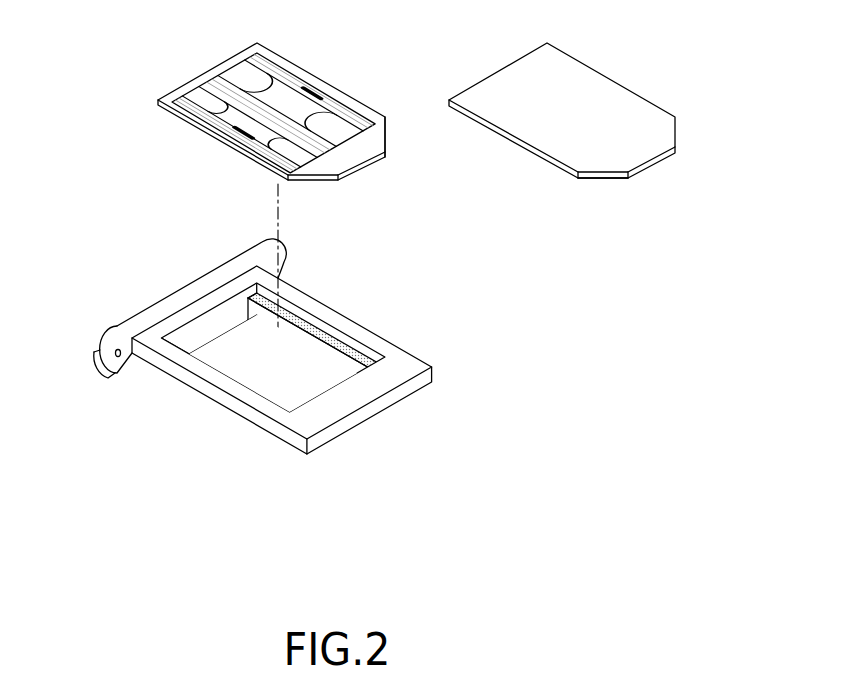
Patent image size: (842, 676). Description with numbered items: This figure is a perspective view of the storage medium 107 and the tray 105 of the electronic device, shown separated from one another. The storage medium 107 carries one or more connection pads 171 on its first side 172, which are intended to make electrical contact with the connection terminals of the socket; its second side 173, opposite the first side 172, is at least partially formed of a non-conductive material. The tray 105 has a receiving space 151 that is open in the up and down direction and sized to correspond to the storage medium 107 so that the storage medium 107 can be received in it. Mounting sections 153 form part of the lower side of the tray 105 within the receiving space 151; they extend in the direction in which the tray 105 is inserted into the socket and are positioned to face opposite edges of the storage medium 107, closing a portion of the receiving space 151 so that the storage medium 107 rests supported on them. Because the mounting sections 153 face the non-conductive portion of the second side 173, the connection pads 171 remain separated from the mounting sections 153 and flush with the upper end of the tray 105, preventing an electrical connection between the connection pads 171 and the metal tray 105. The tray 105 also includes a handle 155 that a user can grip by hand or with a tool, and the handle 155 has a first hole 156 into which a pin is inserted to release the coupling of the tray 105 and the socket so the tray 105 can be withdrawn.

The tray 105 is at (410, 408).
The storage medium 107 is at (372, 167).
The receiving space 151 is at (300, 358).
The mounting sections 153 is at (357, 357).
The handle 155 is at (113, 368).
The first hole 156 is at (115, 353).
The connection pads 171 is at (332, 102).
The first side 172 is at (605, 182).
The second side 173 is at (600, 95).